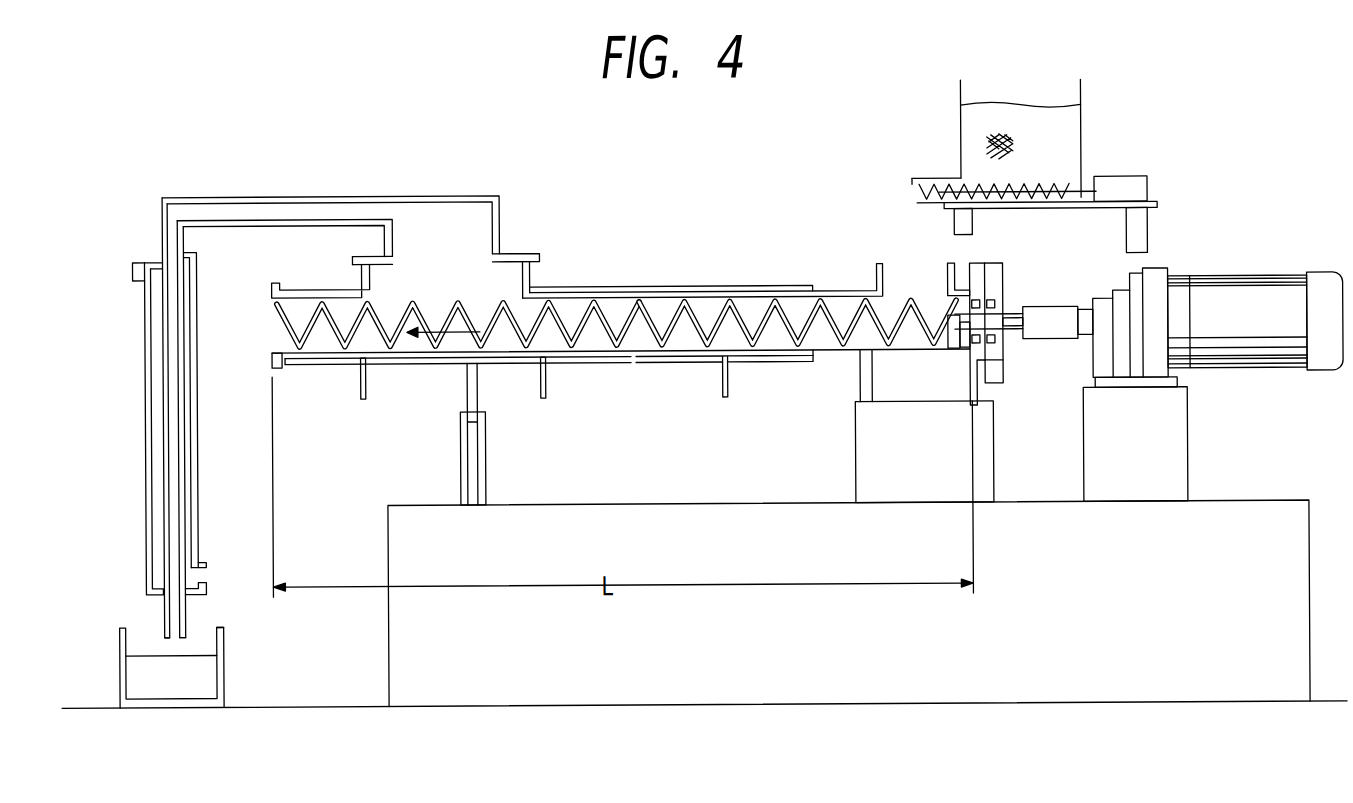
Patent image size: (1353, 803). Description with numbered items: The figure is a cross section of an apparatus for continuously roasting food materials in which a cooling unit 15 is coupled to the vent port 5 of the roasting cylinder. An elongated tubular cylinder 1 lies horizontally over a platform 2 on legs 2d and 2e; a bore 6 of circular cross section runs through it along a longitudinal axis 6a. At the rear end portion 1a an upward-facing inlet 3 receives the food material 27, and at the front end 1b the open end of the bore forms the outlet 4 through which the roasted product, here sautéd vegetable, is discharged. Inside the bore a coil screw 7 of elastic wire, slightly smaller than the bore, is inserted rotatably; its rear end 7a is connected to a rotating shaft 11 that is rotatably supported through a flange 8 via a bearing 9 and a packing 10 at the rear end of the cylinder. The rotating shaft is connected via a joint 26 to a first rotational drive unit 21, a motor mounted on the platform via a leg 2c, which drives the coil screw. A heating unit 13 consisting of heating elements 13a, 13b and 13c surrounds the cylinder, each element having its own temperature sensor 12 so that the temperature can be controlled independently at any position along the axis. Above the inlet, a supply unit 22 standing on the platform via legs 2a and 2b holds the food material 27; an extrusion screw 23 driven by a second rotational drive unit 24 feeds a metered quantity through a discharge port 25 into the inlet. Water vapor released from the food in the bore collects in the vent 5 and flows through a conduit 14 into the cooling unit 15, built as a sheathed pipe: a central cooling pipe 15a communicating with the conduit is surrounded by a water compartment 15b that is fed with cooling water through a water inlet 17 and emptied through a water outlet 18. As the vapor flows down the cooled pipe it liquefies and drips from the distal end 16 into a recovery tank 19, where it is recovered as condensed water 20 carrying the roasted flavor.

The tubular cylinder 1 is at (845, 292).
The rear end portion 1a is at (948, 341).
The front end 1b is at (280, 368).
The platform 2 is at (680, 692).
The leg 2a is at (1150, 214).
The leg 2b is at (957, 227).
The leg 2c is at (1187, 480).
The leg 2d is at (855, 480).
The leg 2e is at (478, 485).
The inlet 3 is at (907, 280).
The outlet 4 is at (272, 327).
The vent 5 is at (447, 247).
The bore 6 is at (614, 303).
The longitudinal axis 6a is at (462, 330).
The coil screw 7 is at (702, 320).
The rear end 7a is at (960, 350).
The flange 8 is at (1005, 276).
The bearing 9 is at (1003, 366).
The packing 10 is at (980, 350).
The rotating shaft 11 is at (1000, 318).
The temperature sensor 12 is at (366, 399).
The heating unit 13 is at (743, 280).
The heating element 13a is at (400, 364).
The heating element 13b is at (590, 364).
The heating element 13c is at (782, 364).
The conduit 14 is at (356, 197).
The cooling unit 15 is at (145, 413).
The cooling pipe 15a is at (170, 455).
The water compartment 15b is at (160, 500).
The distal end 16 is at (165, 648).
The water inlet 17 is at (205, 582).
The water outlet 18 is at (138, 272).
The recovery tank 19 is at (222, 682).
The condensed water 20 is at (160, 688).
The first rotational drive unit 21 is at (1258, 290).
The supply unit 22 is at (1086, 120).
The extrusion screw 23 is at (1057, 189).
The second rotational drive unit 24 is at (1140, 192).
The discharge port 25 is at (915, 188).
The joint 26 is at (1063, 312).
The food material 27 is at (1038, 128).